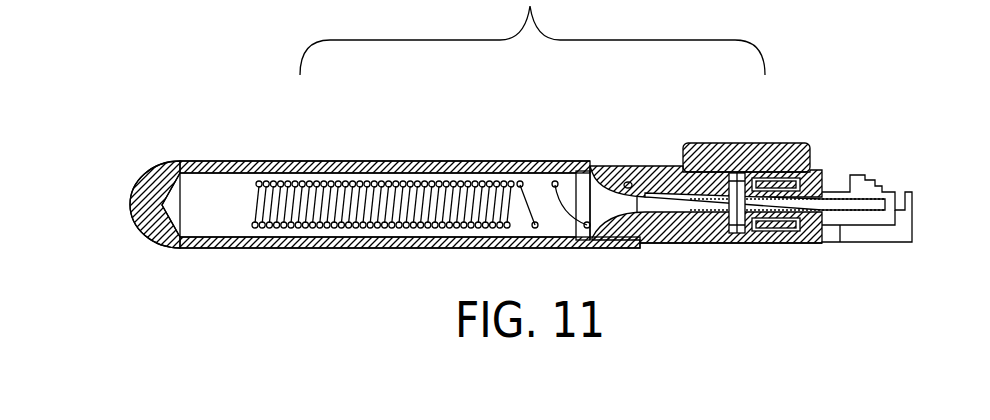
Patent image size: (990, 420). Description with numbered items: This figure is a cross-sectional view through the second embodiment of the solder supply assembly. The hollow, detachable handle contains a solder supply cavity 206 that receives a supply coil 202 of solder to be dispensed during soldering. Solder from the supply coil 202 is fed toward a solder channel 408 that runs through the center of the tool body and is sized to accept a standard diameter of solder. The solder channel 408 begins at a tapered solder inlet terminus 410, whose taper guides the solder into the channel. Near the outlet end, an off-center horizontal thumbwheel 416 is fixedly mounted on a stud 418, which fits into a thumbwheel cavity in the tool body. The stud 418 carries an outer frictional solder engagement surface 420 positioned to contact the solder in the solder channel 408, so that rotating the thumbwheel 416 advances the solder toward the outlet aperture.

The solder supply cavity 206 is at (222, 195).
The supply coil 202 is at (411, 190).
The tapered solder inlet terminus 410 is at (608, 203).
The solder channel 408 is at (645, 197).
The thumbwheel 416 is at (808, 146).
The stud 418 is at (812, 186).
The solder engagement surface 420 is at (736, 235).